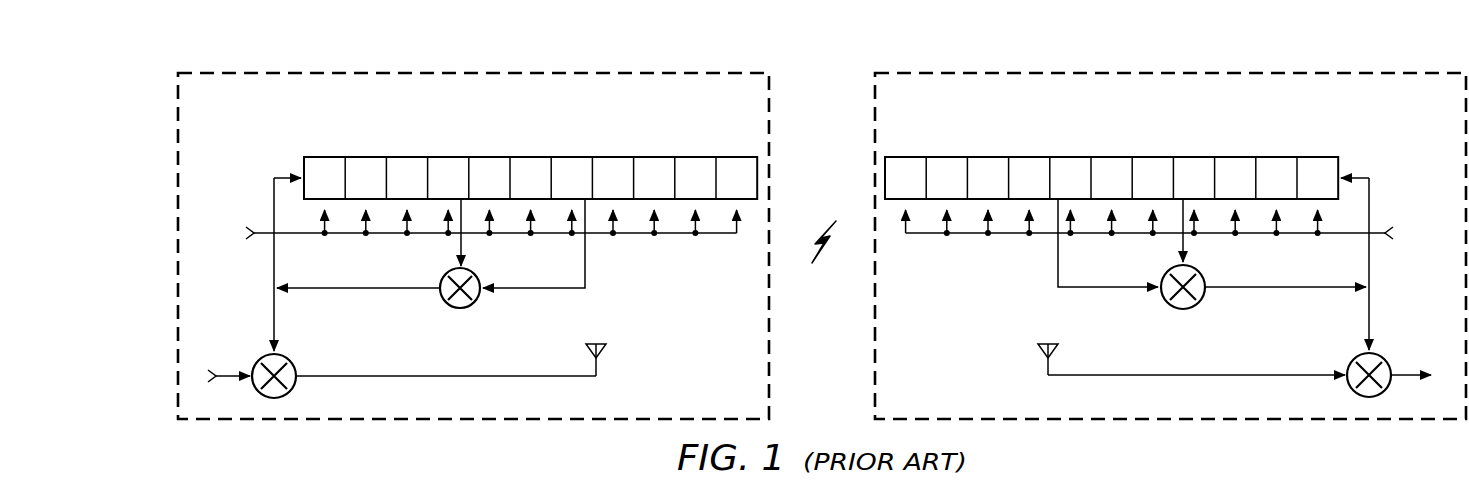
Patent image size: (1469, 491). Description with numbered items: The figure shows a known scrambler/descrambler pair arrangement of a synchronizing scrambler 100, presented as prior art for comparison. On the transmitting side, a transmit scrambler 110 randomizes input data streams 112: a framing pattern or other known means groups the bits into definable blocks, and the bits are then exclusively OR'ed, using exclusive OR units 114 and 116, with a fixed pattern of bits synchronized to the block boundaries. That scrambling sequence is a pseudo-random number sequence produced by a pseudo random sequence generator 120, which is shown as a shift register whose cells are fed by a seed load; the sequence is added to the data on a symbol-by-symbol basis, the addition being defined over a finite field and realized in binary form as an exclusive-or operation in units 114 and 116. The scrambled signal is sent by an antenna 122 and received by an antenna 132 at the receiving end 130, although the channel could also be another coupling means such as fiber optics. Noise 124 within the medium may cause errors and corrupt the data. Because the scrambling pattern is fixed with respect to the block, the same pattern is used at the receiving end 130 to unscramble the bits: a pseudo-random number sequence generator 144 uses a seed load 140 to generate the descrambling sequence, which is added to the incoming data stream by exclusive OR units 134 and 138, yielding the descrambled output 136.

The synchronizing scrambler 100 is at (172, 30).
The transmit scrambler 110 is at (268, 131).
The input data streams 112 is at (215, 370).
The exclusive OR unit 114 is at (290, 360).
The exclusive OR unit 116 is at (454, 309).
The pseudo random sequence generator 120 is at (532, 146).
The antenna 122 is at (603, 350).
The noise 124 is at (826, 226).
The receiving end 130 is at (955, 131).
The antenna 132 is at (1038, 351).
The exclusive OR unit 134 is at (1353, 359).
The data output 136 is at (1405, 373).
The exclusive OR unit 138 is at (1196, 308).
The seed load 140 is at (1392, 226).
The pseudo-random number sequence generator 144 is at (1112, 146).